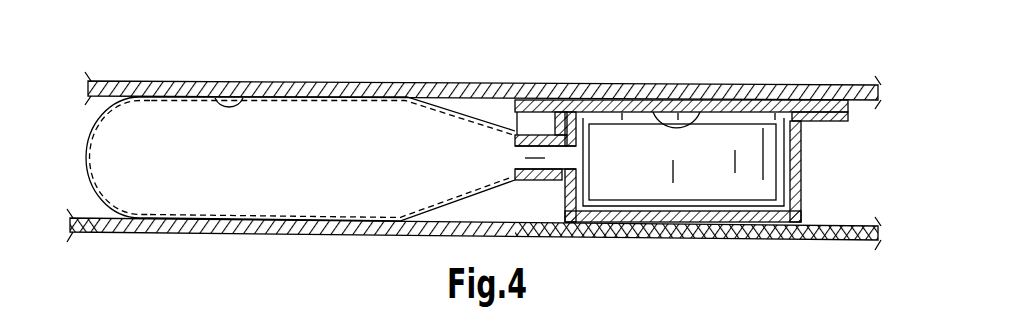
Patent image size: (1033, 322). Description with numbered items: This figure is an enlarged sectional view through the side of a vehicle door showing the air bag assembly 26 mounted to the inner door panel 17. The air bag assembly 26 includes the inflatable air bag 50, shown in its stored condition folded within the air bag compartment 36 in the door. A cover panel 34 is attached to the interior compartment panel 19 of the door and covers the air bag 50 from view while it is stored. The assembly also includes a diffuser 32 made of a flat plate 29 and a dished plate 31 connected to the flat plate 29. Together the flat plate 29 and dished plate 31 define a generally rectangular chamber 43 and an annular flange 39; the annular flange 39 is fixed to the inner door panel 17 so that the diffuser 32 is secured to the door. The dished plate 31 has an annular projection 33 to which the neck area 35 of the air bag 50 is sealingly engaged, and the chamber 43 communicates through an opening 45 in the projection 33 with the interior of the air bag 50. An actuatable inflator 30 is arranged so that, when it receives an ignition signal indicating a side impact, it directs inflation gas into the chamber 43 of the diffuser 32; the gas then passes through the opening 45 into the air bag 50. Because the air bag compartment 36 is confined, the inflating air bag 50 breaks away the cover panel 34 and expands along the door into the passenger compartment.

The inner door panel 17 is at (158, 82).
The interior compartment panel 19 is at (474, 253).
The air bag assembly 26 is at (78, 154).
The flat plate 29 is at (776, 107).
The inflator 30 is at (744, 122).
The dished plate 31 is at (717, 207).
The diffuser 32 is at (808, 157).
The annular projection 33 is at (556, 164).
The cover panel 34 is at (225, 233).
The neck area 35 is at (558, 164).
The air bag compartment 36 is at (213, 82).
The annular flange 39 is at (857, 123).
The chamber 43 is at (697, 110).
The opening 45 is at (545, 165).
The air bag 50 is at (286, 110).